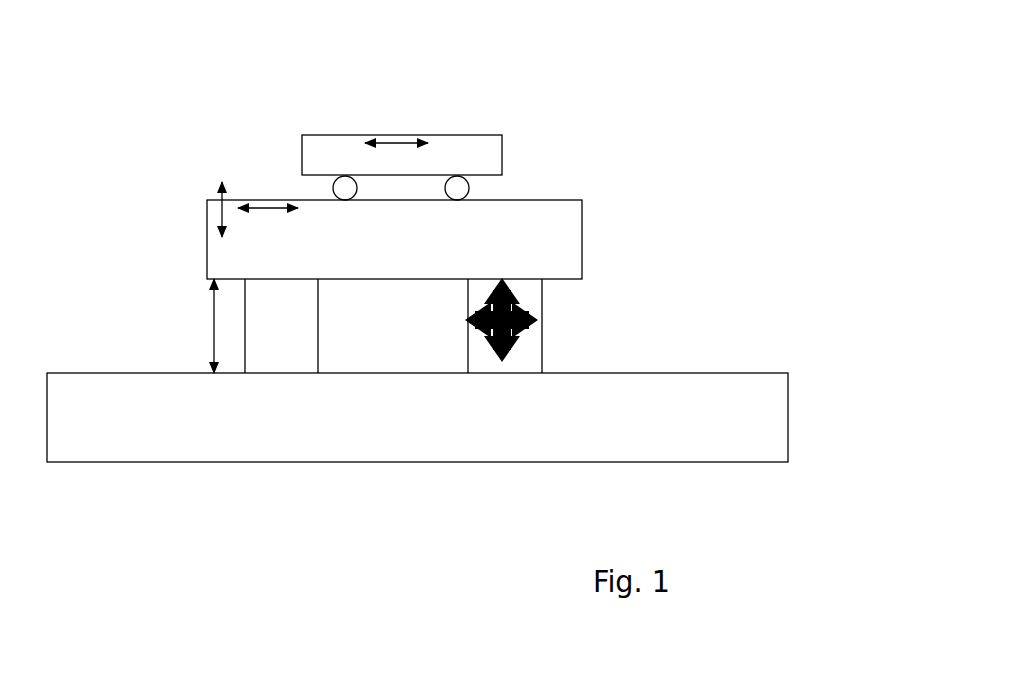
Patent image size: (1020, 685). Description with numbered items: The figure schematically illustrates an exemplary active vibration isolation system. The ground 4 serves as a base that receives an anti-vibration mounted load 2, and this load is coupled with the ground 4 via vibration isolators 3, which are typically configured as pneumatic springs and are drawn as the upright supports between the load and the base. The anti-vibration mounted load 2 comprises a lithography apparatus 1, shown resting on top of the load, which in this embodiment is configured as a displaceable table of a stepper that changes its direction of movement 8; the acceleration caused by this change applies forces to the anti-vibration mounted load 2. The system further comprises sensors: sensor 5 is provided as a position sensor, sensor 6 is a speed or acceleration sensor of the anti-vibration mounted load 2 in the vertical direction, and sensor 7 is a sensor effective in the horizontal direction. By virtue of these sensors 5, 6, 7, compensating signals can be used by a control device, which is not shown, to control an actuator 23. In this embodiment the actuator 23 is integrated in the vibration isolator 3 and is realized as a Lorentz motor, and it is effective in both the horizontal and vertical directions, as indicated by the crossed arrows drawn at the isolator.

The lithography apparatus 1 is at (480, 153).
The anti-vibration mounted load 2 is at (540, 237).
The vibration isolator 3 is at (523, 348).
The ground 4 is at (643, 390).
The position sensor 5 is at (213, 327).
The speed or acceleration sensor 6 is at (207, 210).
The horizontal direction sensor 7 is at (270, 207).
The direction of movement 8 is at (397, 135).
The actuator 23 is at (477, 337).